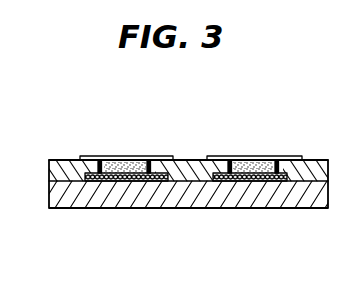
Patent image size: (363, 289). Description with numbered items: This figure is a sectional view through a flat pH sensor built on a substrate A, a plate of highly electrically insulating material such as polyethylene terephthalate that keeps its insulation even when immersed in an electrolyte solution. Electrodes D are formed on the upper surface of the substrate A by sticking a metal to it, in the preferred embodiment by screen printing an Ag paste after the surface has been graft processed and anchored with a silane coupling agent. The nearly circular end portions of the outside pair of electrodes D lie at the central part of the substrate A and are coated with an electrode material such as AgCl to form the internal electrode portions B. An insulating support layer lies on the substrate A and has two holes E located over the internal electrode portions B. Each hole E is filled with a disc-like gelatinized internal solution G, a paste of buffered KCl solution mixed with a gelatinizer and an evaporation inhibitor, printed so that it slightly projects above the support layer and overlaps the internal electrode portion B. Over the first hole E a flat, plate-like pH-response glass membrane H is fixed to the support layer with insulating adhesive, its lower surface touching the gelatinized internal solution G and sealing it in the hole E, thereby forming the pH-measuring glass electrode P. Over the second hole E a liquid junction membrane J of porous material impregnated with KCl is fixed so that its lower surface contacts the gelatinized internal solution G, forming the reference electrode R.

The substrate A is at (188, 203).
The internal electrode portions B is at (67, 157).
The electrodes D is at (95, 182).
The holes E is at (111, 156).
The gelatinized internal solutions G is at (128, 156).
The pH-response glass membrane H is at (93, 156).
The liquid junction membrane J is at (271, 156).
The pH-measuring glass electrode P is at (107, 209).
The reference electrode R is at (252, 209).